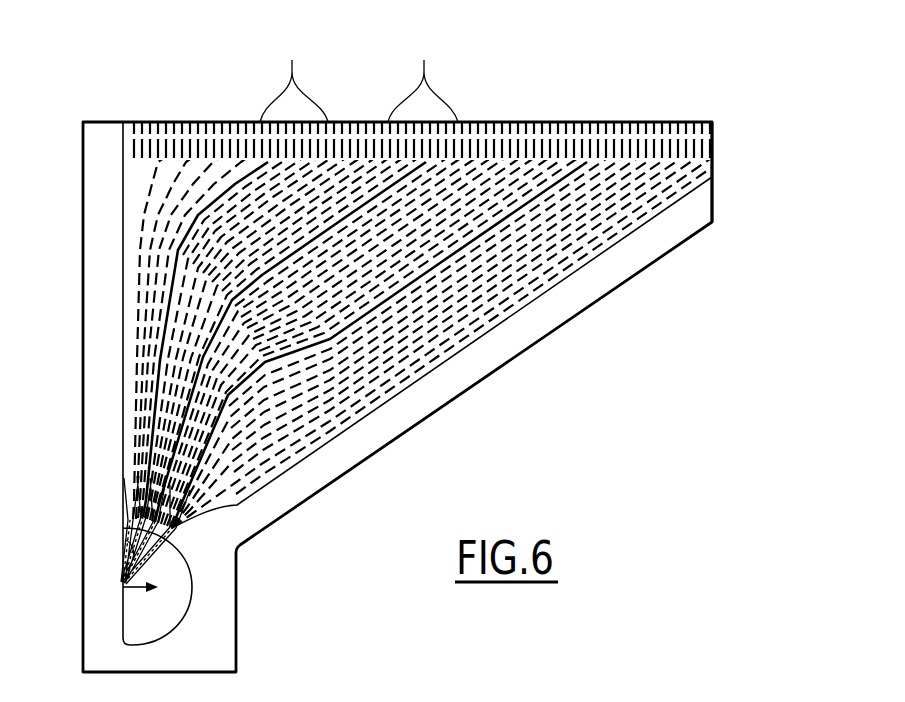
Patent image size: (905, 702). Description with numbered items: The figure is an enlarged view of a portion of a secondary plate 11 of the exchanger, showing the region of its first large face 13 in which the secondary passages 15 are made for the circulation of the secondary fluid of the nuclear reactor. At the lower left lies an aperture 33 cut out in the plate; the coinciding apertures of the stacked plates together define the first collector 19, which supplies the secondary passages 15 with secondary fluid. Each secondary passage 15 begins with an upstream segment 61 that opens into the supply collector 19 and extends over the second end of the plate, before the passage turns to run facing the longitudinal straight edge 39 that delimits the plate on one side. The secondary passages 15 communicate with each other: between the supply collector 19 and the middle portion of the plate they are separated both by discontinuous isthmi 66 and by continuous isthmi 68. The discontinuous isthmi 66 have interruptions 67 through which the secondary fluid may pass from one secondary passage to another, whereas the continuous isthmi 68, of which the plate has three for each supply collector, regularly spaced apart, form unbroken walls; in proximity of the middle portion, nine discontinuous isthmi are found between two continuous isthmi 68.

The secondary plate 11 is at (627, 86).
The first large face 13 is at (640, 242).
The secondary passages 15 is at (422, 95).
The first collector 19 is at (123, 587).
The aperture 33 is at (133, 557).
The longitudinal straight edge 39 is at (713, 187).
The upstream segment 61 is at (170, 432).
The discontinuous isthmi 66 is at (517, 282).
The interruptions 67 is at (612, 250).
The continuous isthmi 68 is at (190, 228).